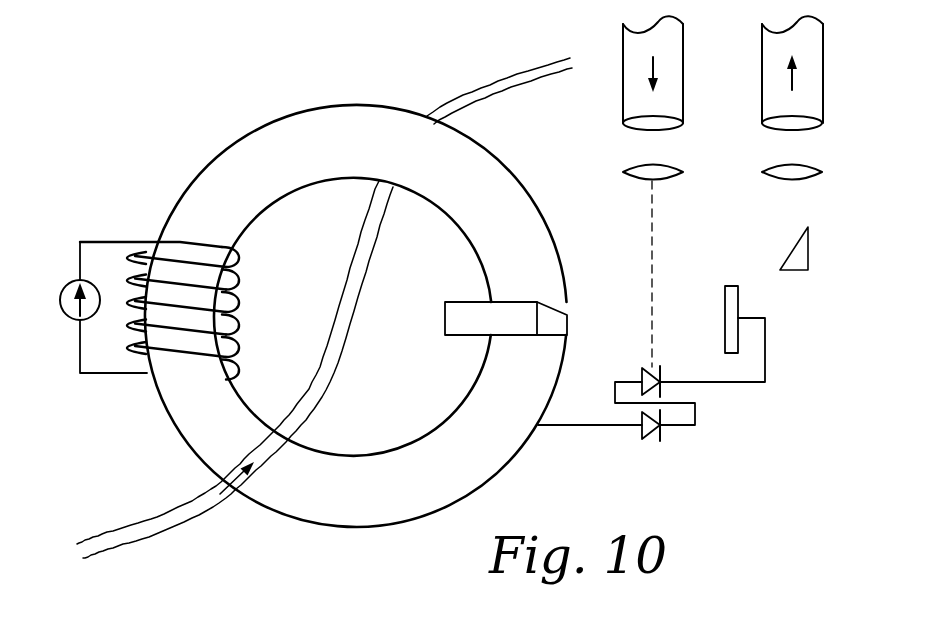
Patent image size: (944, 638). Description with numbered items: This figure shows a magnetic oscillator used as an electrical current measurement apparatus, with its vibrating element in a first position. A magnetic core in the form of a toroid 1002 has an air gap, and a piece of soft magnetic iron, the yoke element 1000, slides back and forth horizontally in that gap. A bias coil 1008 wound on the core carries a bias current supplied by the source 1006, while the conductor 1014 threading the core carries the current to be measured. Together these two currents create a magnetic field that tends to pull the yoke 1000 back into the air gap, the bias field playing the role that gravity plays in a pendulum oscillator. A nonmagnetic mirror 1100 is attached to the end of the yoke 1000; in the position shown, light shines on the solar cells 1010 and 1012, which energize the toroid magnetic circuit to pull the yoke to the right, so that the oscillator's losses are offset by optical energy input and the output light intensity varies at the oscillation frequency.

The toroid 1002 is at (360, 104).
The bias coil 1008 is at (183, 243).
The source 1006 is at (66, 315).
The conductor 1014 is at (305, 402).
The yoke element 1000 is at (462, 337).
The nonmagnetic mirror 1100 is at (567, 306).
The solar cell 1012 is at (650, 388).
The solar cell 1010 is at (644, 441).